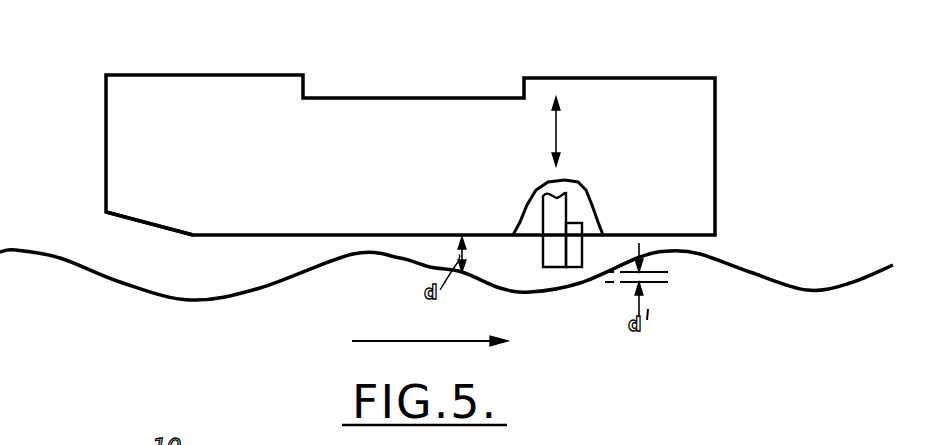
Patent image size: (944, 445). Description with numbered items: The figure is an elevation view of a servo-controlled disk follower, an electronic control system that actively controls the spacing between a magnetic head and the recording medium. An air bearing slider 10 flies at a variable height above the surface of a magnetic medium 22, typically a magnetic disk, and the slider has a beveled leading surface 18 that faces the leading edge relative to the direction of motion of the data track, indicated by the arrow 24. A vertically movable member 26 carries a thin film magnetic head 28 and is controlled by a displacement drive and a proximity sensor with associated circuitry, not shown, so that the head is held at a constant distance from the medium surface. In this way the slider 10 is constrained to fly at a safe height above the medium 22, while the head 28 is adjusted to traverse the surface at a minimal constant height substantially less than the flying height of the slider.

The air bearing slider 10 is at (220, 75).
The tapered leading surface 18 is at (156, 225).
The magnetic medium 22 is at (319, 258).
The arrow 24 is at (409, 342).
The vertically movable member 26 is at (548, 218).
The thin film magnetic head 28 is at (575, 250).